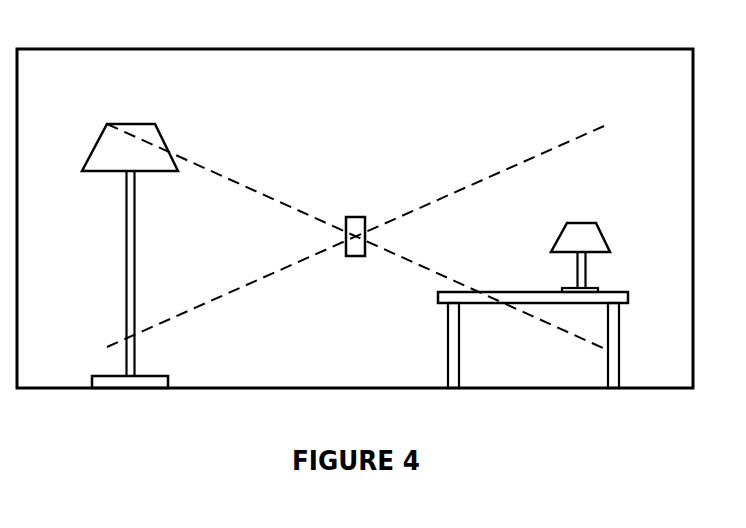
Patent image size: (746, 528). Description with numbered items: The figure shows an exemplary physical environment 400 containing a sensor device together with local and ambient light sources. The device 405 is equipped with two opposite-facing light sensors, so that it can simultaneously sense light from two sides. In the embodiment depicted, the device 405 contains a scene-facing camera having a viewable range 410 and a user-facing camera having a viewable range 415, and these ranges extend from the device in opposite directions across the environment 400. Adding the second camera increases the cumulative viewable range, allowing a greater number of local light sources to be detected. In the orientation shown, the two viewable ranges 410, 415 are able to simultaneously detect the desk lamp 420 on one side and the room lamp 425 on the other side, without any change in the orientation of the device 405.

The room environment 400 is at (184, 48).
The device 405 is at (353, 216).
The viewable range 410 is at (462, 188).
The viewable range 415 is at (240, 184).
The desk lamp 420 is at (588, 222).
The room lamp 425 is at (138, 123).